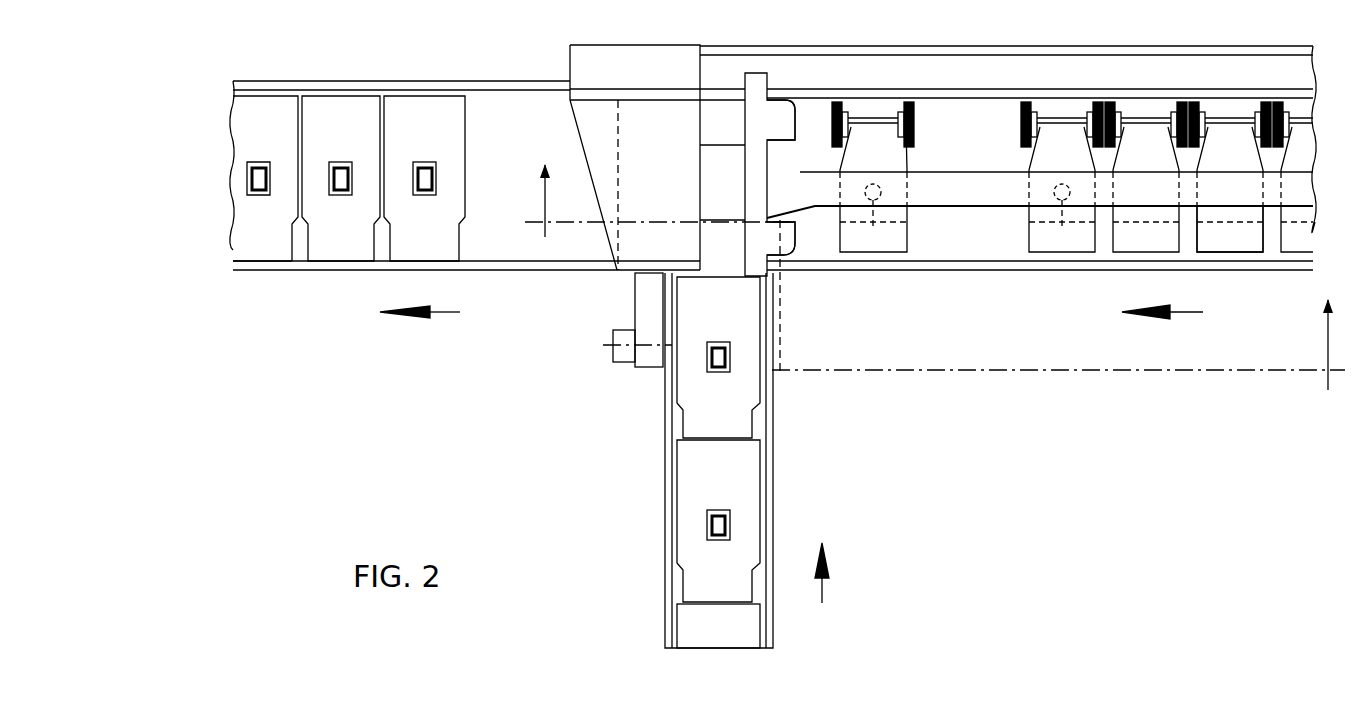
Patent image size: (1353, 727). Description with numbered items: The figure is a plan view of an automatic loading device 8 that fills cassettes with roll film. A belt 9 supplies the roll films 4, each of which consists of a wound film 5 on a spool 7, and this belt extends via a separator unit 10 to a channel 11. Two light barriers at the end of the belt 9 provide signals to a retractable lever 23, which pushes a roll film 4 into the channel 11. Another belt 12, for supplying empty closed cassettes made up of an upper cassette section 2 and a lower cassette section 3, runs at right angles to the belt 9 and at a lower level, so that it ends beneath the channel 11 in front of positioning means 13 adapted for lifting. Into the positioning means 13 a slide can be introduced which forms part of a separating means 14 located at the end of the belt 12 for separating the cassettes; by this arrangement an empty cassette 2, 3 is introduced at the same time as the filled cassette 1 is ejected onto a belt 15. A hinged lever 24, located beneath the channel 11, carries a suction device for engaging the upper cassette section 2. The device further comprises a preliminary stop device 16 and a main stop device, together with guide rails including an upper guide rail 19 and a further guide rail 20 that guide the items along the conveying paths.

The filled cassette 1 is at (420, 100).
The upper cassette section 2 is at (752, 493).
The lower cassette section 3 is at (932, 277).
The roll film 4 is at (1229, 246).
The wound film 5 is at (1055, 166).
The spool 7 is at (1018, 118).
The automatic loading device 8 is at (561, 441).
The belt 9 is at (962, 255).
The separator unit 10 is at (866, 44).
The channel 11 is at (727, 78).
The belt 12 is at (760, 590).
The positioning means 13 is at (776, 288).
The separating means 14 is at (615, 274).
The belt 15 is at (537, 253).
The preliminary stop device 16 is at (1062, 238).
The upper guide rail 19 is at (983, 192).
The guide rail 20 is at (767, 157).
The retractable lever 23 is at (783, 112).
The hinged lever 24 is at (655, 308).